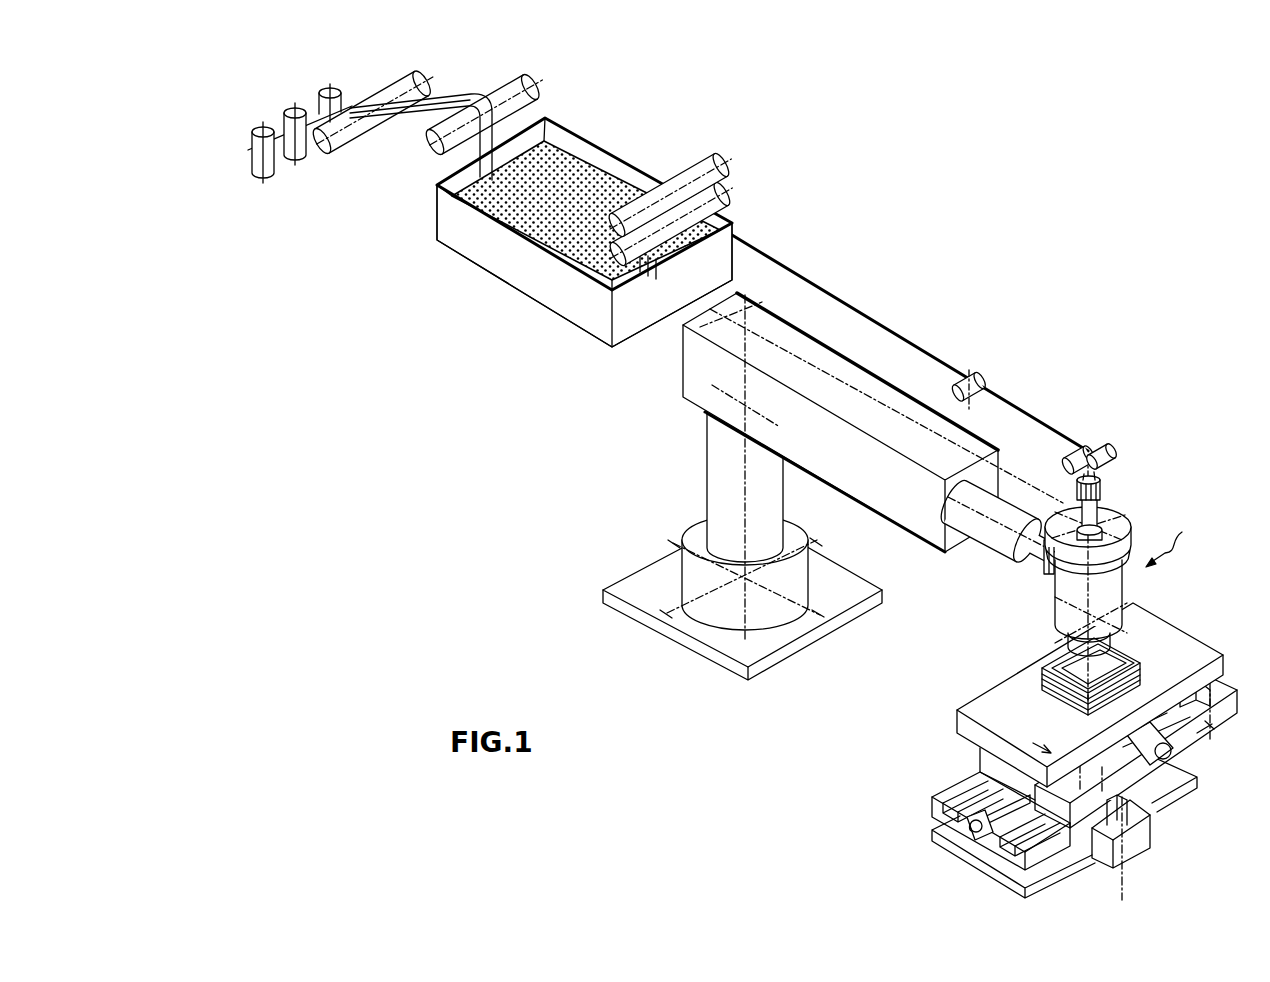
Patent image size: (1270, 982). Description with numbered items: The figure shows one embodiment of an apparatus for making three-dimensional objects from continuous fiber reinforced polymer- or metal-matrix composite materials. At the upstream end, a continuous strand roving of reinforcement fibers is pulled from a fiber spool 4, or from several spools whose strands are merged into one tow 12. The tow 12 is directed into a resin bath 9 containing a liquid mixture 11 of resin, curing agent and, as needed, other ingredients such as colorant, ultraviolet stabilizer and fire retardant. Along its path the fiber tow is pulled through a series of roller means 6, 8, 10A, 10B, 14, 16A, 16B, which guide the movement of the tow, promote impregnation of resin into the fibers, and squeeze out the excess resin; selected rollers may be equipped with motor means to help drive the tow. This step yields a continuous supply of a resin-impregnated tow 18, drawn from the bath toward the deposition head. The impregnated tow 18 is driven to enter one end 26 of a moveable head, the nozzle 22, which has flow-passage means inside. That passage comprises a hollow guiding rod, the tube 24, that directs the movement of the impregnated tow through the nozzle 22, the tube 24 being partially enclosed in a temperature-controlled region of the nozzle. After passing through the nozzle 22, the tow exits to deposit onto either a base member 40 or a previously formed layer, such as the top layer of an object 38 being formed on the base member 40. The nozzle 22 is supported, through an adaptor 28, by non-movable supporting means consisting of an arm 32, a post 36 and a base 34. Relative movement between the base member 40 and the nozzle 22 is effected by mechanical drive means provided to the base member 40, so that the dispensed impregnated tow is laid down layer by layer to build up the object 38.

The fiber spool 4 is at (290, 112).
The roller means 6 is at (343, 143).
The roller means 8 is at (533, 90).
The resin bath 9 is at (548, 303).
The roller means 10A is at (710, 167).
The roller means 10B is at (723, 205).
The liquid mixture 11 is at (518, 208).
The tow 12 is at (440, 103).
The roller means 14 is at (978, 377).
The roller means 16A is at (1087, 445).
The roller means 16B is at (1108, 458).
The resin-impregnated tow 18 is at (832, 296).
The nozzle 22 is at (1131, 577).
The guiding tube 24 is at (1092, 517).
The end of nozzle 26 is at (1101, 489).
The adaptor 28 is at (1040, 566).
The arm 32 is at (912, 508).
The base 34 is at (722, 662).
The post 36 is at (720, 462).
The object 38 is at (1040, 682).
The base member 40 is at (965, 725).